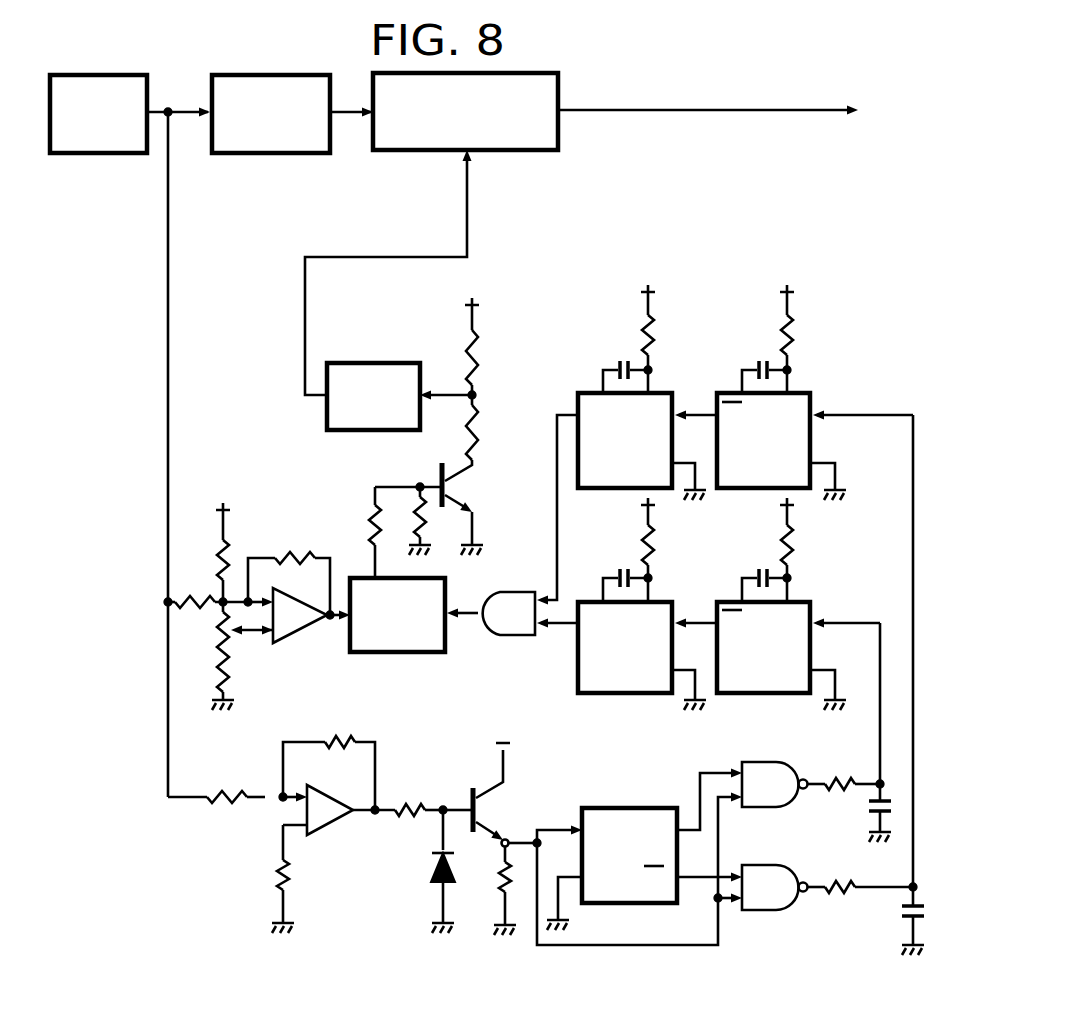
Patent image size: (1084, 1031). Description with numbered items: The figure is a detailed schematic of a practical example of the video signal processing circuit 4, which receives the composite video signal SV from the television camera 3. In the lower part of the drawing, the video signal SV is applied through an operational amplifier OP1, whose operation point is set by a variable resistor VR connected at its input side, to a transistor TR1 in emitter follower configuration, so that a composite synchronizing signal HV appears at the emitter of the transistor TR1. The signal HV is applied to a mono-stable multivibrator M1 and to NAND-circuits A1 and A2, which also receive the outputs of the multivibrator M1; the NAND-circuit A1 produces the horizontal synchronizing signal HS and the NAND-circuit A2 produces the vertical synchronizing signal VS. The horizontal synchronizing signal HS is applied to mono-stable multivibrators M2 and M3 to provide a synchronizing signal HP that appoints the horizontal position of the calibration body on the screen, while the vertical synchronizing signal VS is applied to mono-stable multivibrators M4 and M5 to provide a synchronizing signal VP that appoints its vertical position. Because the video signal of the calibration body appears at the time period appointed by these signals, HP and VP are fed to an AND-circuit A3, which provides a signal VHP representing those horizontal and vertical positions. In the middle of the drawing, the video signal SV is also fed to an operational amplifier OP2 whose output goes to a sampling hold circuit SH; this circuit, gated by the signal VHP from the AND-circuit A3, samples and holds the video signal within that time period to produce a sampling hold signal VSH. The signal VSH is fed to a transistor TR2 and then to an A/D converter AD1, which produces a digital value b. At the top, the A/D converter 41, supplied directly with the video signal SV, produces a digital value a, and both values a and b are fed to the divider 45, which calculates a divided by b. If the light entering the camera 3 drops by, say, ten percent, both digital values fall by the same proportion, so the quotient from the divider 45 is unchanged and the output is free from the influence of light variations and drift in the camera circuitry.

The television camera 3 is at (114, 154).
The A/D converter 41 is at (299, 152).
The divider (correcting circuit) 45 is at (524, 152).
The video signal processing circuit 4 is at (812, 187).
The digital value a is at (346, 121).
The digital value b is at (378, 257).
The composite video signal SV is at (160, 104).
The A/D converter AD1 is at (391, 442).
The transistor TR2 is at (454, 487).
The sampling hold signal VSH is at (373, 555).
The variable resistor VR is at (220, 635).
The operational amplifier OP2 is at (311, 635).
The sampling hold circuit SH is at (420, 655).
The signal VHP is at (465, 614).
The AND-circuit A3 is at (497, 643).
The synchronizing signal HP is at (562, 643).
The synchronizing signal VP is at (556, 538).
The mono-stable multivibrator M5 is at (672, 400).
The mono-stable multivibrator M4 is at (812, 400).
The vertical synchronizing signal VS is at (870, 418).
The mono-stable multivibrator M3 is at (662, 696).
The mono-stable multivibrator M2 is at (790, 696).
The horizontal synchronizing signal HS is at (857, 625).
The operational amplifier OP1 is at (348, 828).
The transistor TR1 is at (472, 794).
The composite synchronizing signal HV is at (521, 843).
The mono-stable multivibrator M1 is at (617, 811).
The NAND-circuit A1 is at (768, 810).
The NAND-circuit A2 is at (768, 912).